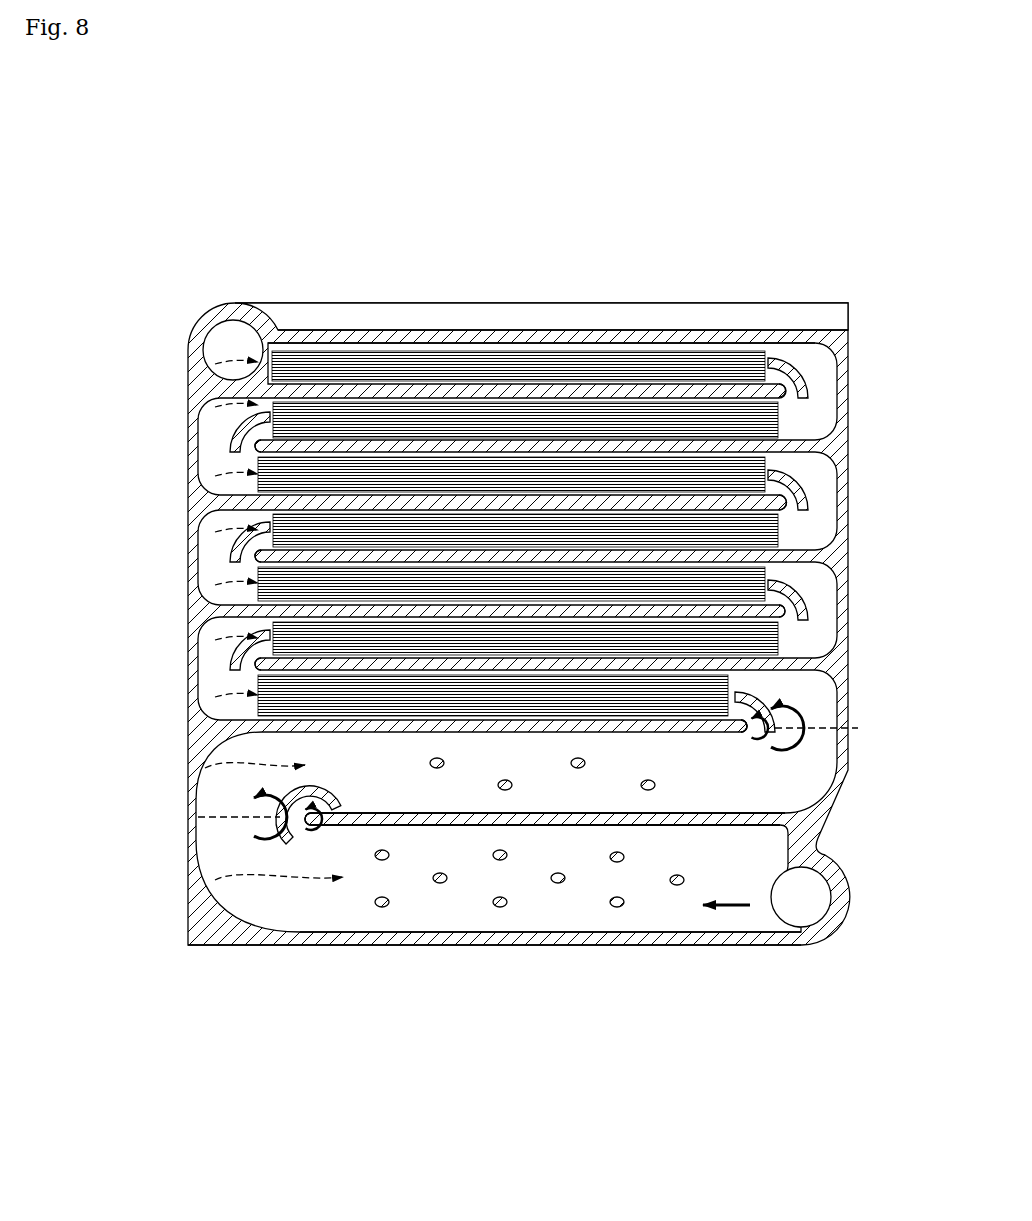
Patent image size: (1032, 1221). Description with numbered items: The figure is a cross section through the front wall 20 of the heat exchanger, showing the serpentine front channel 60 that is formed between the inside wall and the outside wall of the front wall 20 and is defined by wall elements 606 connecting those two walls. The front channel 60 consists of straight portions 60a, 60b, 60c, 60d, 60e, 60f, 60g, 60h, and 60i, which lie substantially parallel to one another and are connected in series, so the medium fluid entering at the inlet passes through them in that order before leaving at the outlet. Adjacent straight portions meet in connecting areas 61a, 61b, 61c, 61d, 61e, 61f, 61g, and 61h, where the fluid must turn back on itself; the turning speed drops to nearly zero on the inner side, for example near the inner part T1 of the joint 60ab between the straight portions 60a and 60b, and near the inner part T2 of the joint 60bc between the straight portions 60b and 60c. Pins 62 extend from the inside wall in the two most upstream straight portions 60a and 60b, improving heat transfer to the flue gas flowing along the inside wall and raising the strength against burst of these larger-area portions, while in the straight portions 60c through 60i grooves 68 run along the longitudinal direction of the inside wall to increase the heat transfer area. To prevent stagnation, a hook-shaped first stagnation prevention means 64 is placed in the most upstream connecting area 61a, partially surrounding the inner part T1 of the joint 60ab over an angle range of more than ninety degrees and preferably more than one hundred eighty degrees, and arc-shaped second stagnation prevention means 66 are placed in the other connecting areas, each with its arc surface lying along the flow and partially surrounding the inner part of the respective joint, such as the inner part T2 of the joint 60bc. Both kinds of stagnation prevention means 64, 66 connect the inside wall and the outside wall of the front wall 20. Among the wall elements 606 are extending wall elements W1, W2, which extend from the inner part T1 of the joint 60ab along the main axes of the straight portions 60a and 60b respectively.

The front wall 20 is at (390, 290).
The grooves 68 is at (481, 345).
The front channel 60 is at (655, 912).
The wall elements 606 is at (483, 828).
The straight portion 60a is at (198, 898).
The straight portion 60b is at (198, 766).
The straight portion 60c is at (198, 724).
The straight portion 60d is at (198, 635).
The straight portion 60e is at (198, 603).
The straight portion 60f is at (198, 530).
The straight portion 60g is at (198, 493).
The straight portion 60h is at (198, 411).
The straight portion 60i is at (198, 362).
The joint 60ab is at (198, 818).
The joint 60bc is at (835, 728).
The connecting area 61a is at (262, 828).
The connecting area 61b is at (774, 745).
The connecting area 61c is at (245, 672).
The connecting area 61d is at (800, 625).
The connecting area 61e is at (245, 563).
The connecting area 61f is at (800, 515).
The connecting area 61g is at (245, 455).
The connecting area 61h is at (800, 405).
The pins 62 is at (587, 764).
The first stagnation prevention means 64 is at (325, 782).
The second stagnation prevention means 66 is at (812, 372).
The extending wall element W1 is at (400, 822).
The extending wall element W2 is at (375, 813).
The inner part T1 is at (307, 822).
The inner part T2 is at (748, 734).